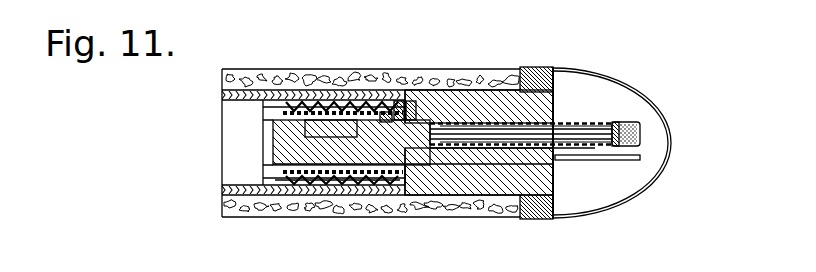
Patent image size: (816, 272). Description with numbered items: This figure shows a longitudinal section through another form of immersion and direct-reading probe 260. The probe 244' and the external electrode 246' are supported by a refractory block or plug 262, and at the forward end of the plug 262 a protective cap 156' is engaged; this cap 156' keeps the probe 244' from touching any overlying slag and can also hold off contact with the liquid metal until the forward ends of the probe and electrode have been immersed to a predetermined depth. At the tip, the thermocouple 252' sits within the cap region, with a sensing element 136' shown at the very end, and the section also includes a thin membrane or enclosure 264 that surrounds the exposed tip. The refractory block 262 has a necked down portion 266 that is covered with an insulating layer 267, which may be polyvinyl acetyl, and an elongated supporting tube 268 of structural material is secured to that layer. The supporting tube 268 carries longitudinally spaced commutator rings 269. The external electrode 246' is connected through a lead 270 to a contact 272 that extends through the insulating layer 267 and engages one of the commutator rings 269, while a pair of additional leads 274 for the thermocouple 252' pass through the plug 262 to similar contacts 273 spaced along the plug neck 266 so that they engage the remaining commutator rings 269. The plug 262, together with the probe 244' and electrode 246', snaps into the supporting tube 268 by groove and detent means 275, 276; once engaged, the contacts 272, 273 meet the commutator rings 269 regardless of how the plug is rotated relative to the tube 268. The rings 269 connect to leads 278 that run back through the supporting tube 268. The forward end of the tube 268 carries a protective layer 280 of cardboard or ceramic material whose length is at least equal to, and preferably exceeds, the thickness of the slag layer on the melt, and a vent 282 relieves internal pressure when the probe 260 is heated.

The immersion and direct-reading probe 260 is at (498, 65).
The refractory block or plug 262 is at (556, 179).
The balloon membrane 264 is at (565, 72).
The necked down portion 266 is at (263, 138).
The insulating layer 267 is at (291, 170).
The supporting tube 268 is at (241, 92).
The commutator rings 269 is at (298, 111).
The lead 270 is at (409, 168).
The contact 272 is at (331, 172).
The contacts 273 is at (331, 111).
The additional leads 274 is at (491, 133).
The groove and detent means 275 is at (397, 116).
The groove and detent means 276 is at (407, 118).
The leads 278 is at (263, 103).
The protective layer 280 is at (258, 212).
The vent 282 is at (419, 116).
The probe 244' is at (551, 106).
The protective cap 156' is at (576, 102).
The thermocouple 252' is at (671, 122).
The sensor element 136' is at (677, 135).
The external electrode 246' is at (634, 176).